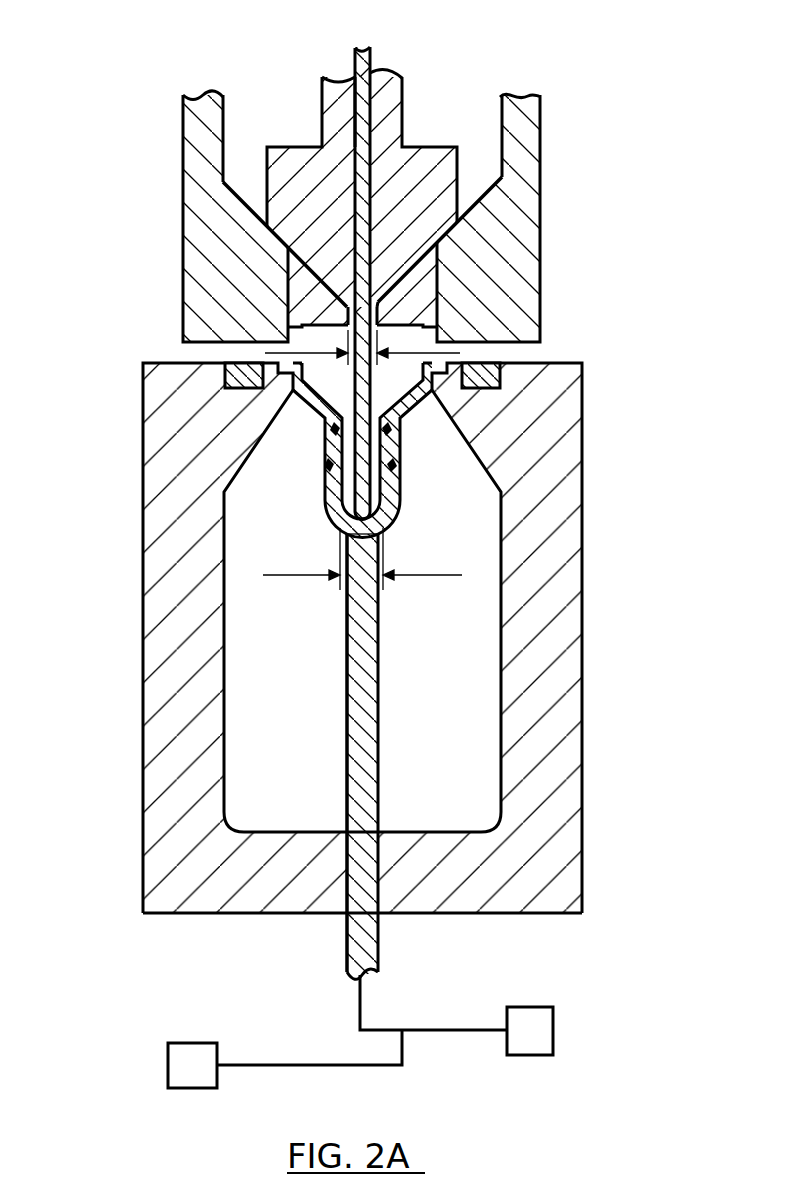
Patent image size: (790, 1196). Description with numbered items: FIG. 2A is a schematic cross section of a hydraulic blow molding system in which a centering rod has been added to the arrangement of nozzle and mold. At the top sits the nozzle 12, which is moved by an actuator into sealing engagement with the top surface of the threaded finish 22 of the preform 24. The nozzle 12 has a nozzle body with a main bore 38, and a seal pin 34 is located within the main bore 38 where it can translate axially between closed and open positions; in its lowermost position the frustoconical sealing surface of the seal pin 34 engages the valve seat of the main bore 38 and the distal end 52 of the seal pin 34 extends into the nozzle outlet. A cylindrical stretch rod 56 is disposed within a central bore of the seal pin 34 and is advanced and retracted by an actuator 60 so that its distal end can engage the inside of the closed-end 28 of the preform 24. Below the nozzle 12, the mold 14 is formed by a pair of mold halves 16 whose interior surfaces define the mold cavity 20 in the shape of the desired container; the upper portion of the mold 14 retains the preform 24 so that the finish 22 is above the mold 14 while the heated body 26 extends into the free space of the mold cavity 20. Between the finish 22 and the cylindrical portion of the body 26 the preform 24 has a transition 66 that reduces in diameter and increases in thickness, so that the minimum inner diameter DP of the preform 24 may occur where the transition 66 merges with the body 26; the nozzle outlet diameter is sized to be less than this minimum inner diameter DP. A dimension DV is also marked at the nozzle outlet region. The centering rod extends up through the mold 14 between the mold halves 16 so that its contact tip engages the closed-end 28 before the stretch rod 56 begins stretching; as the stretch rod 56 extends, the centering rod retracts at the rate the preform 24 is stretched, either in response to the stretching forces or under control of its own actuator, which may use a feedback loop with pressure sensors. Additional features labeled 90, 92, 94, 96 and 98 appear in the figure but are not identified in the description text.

The nozzle 12 is at (540, 133).
The mold 14 is at (583, 728).
The mold halves 16 is at (205, 873).
The mold cavity 20 is at (281, 740).
The threaded finish 22 is at (297, 328).
The preform 24 is at (402, 487).
The body 26 is at (401, 442).
The closed-end 28 is at (383, 538).
The seal pin 34 is at (463, 210).
The main bore 38 is at (223, 138).
The distal end of the seal pin 52 is at (347, 293).
The stretch rod 56 is at (371, 62).
The actuator 60 is at (372, 302).
The transition 66 is at (355, 98).
The sleeve flange 90 is at (312, 382).
The plunger 92 is at (366, 740).
The plunger surface 94 is at (362, 548).
The controller 96 is at (530, 1025).
The actuator 98 is at (195, 1063).
The valve diameter DV is at (345, 362).
The minimum inner diameter of the preform DP is at (295, 575).